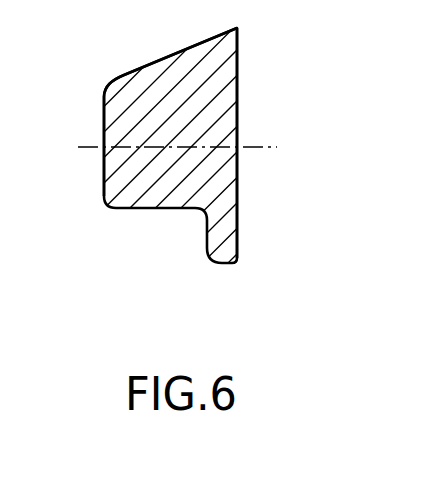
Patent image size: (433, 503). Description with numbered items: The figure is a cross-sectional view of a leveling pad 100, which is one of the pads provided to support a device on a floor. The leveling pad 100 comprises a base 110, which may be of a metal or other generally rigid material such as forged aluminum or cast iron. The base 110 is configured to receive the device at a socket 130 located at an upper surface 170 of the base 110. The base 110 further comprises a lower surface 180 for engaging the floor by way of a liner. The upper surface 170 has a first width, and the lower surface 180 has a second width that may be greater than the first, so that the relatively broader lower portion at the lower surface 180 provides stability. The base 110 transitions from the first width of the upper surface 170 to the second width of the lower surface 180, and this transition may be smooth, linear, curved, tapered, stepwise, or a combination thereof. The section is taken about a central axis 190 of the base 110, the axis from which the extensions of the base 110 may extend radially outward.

The leveling pad 100 is at (140, 229).
The base 110 is at (158, 89).
The socket 130 is at (105, 138).
The upper surface 170 is at (105, 98).
The lower surface 180 is at (237, 84).
The central axis 190 is at (260, 147).